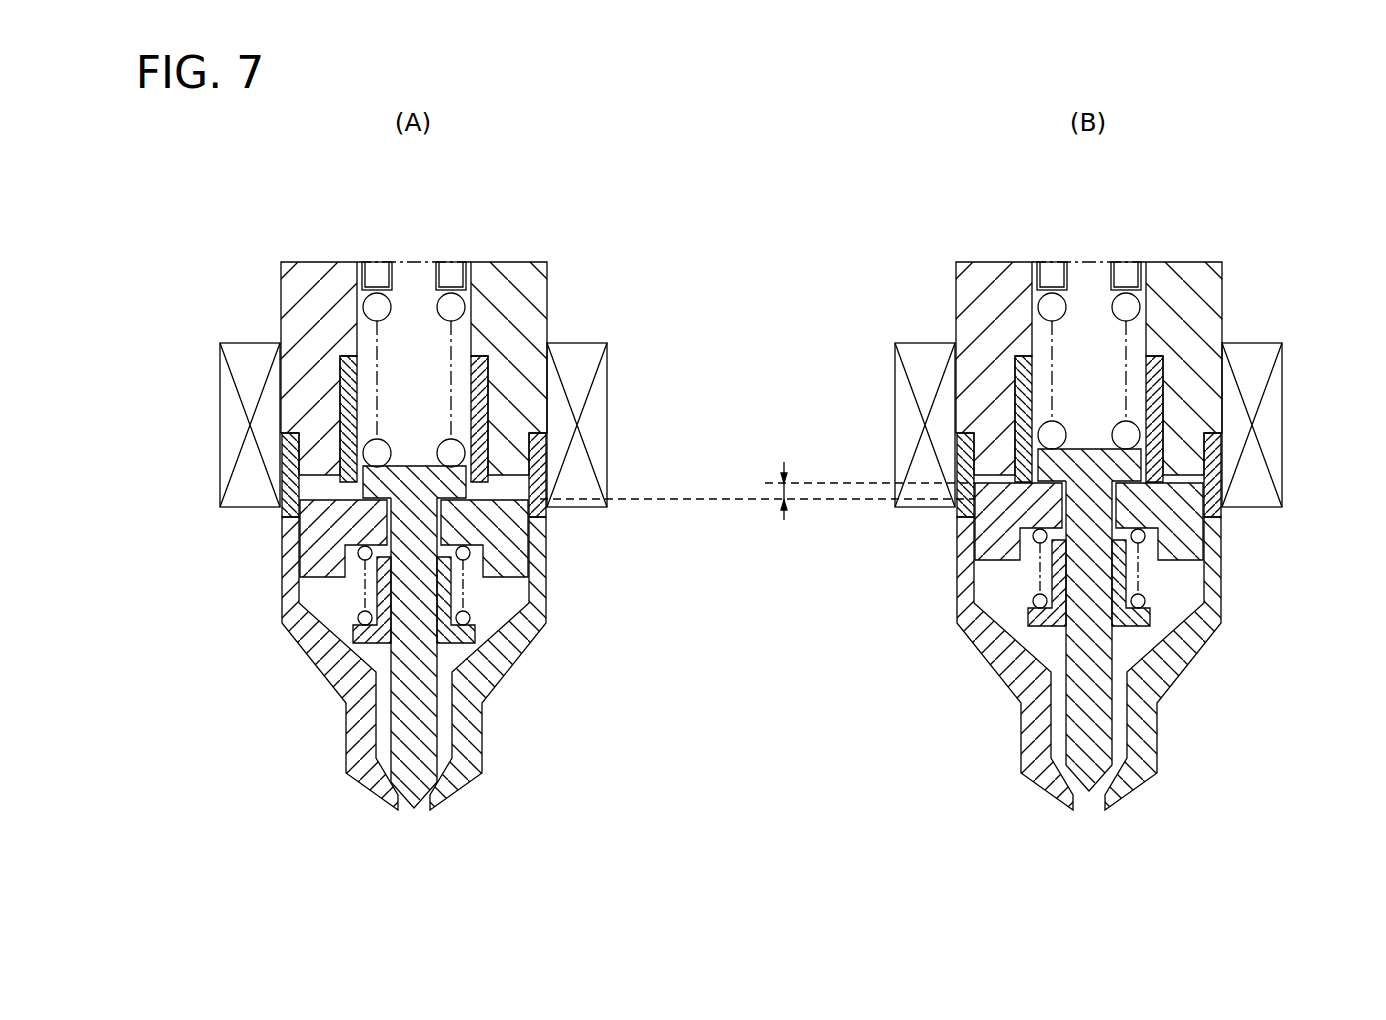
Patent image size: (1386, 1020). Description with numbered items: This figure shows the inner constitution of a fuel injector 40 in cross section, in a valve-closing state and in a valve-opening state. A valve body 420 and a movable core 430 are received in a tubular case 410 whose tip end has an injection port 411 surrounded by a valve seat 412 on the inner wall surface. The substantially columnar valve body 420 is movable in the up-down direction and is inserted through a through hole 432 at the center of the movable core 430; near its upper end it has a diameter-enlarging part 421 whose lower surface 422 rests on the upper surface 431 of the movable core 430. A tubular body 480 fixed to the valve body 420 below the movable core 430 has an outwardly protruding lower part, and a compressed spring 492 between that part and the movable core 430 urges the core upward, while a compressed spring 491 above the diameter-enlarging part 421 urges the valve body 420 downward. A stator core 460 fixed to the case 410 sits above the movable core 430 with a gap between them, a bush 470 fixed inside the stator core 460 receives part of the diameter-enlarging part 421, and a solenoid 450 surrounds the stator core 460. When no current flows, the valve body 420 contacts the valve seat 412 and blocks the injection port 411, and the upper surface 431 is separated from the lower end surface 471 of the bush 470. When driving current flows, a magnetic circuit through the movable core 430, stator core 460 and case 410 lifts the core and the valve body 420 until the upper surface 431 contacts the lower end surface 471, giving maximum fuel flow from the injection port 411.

The fuel injector 40 is at (633, 231).
The case 410 is at (508, 670).
The injection port 411 is at (430, 795).
The valve seat 412 is at (405, 803).
The valve body 420 is at (430, 753).
The diameter-enlarging part 421 is at (322, 490).
The lower surface 422 is at (345, 524).
The movable core 430 is at (314, 518).
The upper surface 431 is at (296, 488).
The through hole 432 is at (440, 515).
The solenoid 450 is at (262, 417).
The stator core 460 is at (293, 282).
The bush 470 is at (481, 368).
The lower end surface 471 is at (468, 490).
The tubular body 480 is at (367, 620).
The spring 491 is at (434, 305).
The spring 492 is at (356, 603).